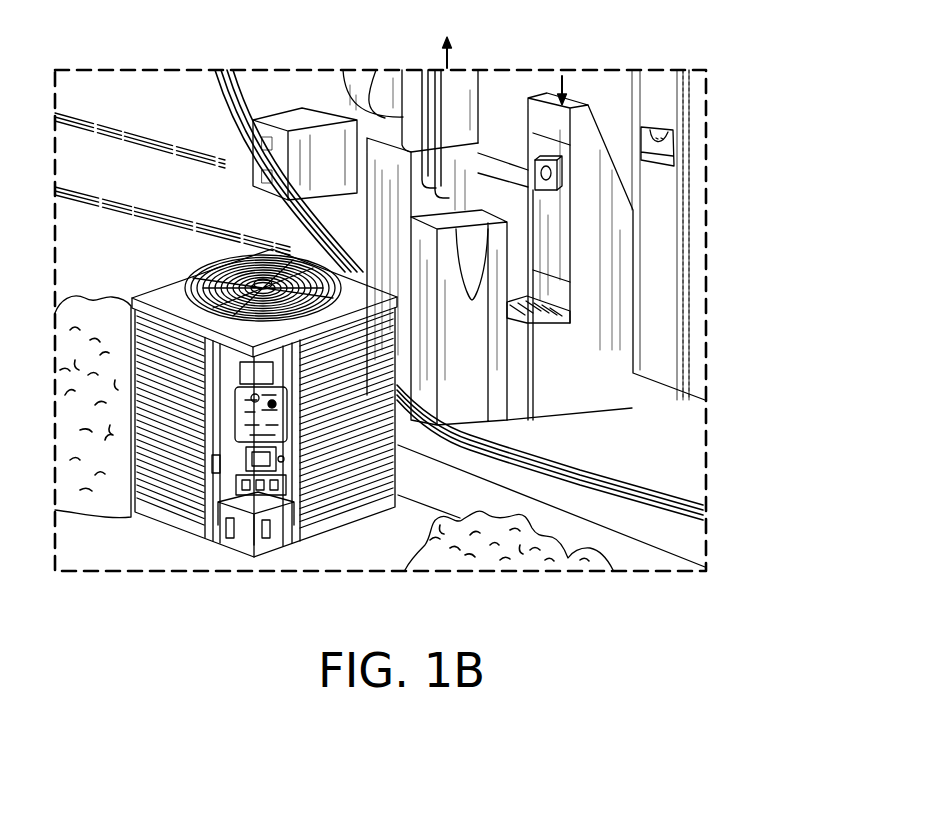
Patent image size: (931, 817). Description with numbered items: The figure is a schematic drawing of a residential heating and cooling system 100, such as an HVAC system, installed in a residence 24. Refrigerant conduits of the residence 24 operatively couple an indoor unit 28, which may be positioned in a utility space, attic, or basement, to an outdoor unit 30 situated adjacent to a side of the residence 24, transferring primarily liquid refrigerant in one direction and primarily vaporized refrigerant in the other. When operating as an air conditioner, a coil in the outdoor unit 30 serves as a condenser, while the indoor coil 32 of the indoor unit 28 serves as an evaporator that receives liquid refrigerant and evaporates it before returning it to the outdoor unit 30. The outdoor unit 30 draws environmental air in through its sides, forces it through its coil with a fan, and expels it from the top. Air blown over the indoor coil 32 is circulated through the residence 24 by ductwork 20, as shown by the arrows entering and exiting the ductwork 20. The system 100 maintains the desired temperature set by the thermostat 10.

The residential heating and cooling system 100 is at (716, 70).
The thermostat 10 is at (668, 148).
The ductwork 20 is at (622, 277).
The residence 24 is at (135, 91).
The indoor unit 28 is at (493, 388).
The outdoor unit 30 is at (156, 517).
The indoor coil 32 is at (470, 155).